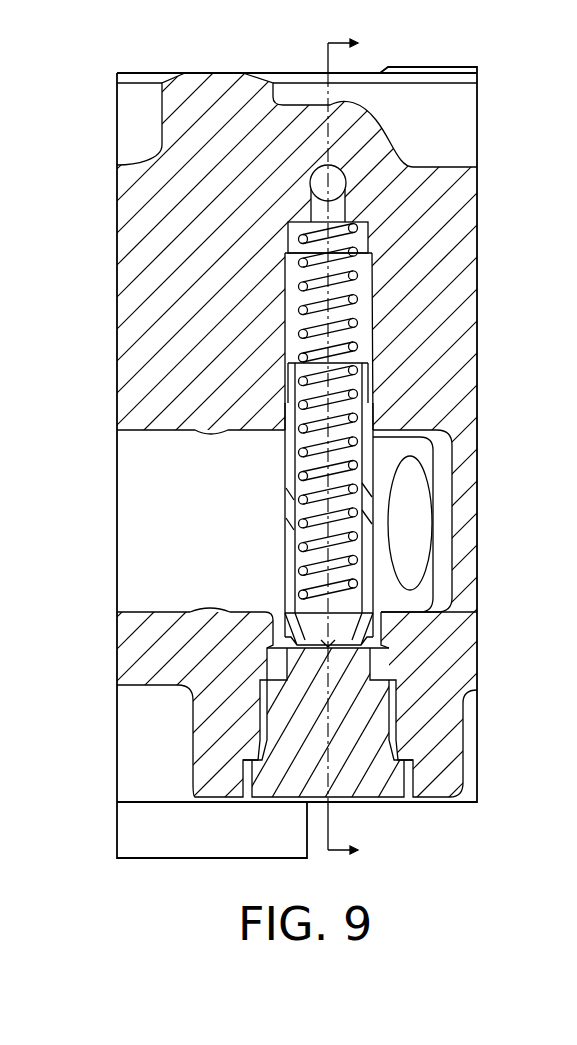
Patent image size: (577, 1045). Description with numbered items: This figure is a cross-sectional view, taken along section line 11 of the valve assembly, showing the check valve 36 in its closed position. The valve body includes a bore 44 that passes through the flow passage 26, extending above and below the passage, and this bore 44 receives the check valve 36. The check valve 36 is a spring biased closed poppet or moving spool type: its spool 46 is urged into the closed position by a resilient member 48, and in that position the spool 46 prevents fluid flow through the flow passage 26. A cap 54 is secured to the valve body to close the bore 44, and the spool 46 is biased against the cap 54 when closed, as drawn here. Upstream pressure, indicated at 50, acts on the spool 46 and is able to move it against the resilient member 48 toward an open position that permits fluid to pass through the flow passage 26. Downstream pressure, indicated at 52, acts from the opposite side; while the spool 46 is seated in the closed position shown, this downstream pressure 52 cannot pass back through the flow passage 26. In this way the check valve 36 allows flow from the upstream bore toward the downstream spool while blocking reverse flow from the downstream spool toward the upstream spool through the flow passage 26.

The section line 11- 11 is at (361, 447).
The flow passage 26 is at (382, 458).
The check valve 36 is at (280, 459).
The bore 44 is at (295, 343).
The spool 46 is at (357, 628).
The resilient member 48 is at (375, 436).
The upstream pressure 50 is at (275, 668).
The downstream pressure 52 is at (408, 537).
The cap 54 is at (376, 772).